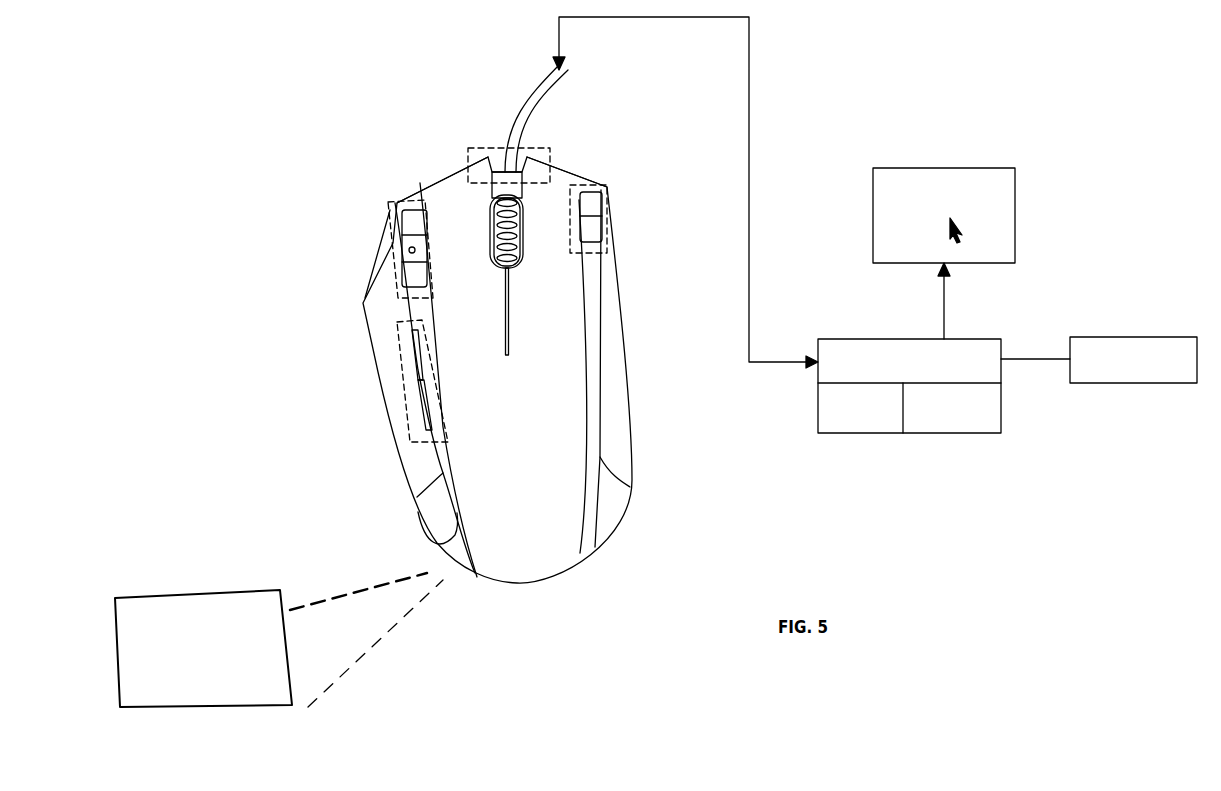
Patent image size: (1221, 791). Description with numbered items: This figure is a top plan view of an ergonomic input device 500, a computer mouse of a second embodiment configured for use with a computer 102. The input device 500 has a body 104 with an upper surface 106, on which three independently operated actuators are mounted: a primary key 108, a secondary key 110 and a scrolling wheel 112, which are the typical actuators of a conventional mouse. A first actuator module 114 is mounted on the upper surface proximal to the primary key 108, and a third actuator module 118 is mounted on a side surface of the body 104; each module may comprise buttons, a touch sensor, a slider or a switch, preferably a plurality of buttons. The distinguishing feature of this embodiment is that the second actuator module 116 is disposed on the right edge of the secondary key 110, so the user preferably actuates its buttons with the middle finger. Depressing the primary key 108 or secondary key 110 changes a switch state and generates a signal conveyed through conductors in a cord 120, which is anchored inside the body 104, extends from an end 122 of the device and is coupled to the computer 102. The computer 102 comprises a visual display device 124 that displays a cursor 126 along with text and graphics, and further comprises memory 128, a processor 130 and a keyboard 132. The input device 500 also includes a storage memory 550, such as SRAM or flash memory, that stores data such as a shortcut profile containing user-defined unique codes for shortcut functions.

The ergonomic input device 500 is at (333, 125).
The computer 102 is at (850, 339).
The body 104 is at (414, 543).
The upper surface 106 is at (512, 422).
The primary key 108 is at (450, 207).
The secondary key 110 is at (557, 180).
The scrolling wheel 112 is at (525, 245).
The first actuator module 114 is at (397, 252).
The second actuator module 116 is at (608, 245).
The third actuator module 118 is at (410, 387).
The cord 120 is at (507, 132).
The end 122 is at (543, 150).
The visual display device 124 is at (947, 167).
The cursor 126 is at (962, 234).
The memory 128 is at (852, 433).
The processor 130 is at (944, 433).
The keyboard 132 is at (1128, 383).
The storage memory 550 is at (222, 693).